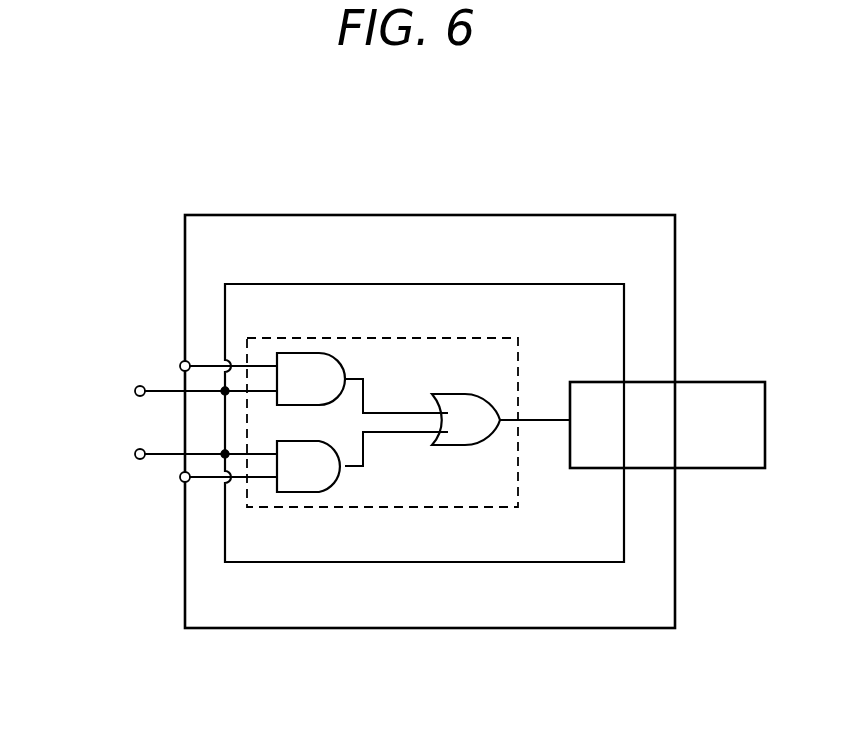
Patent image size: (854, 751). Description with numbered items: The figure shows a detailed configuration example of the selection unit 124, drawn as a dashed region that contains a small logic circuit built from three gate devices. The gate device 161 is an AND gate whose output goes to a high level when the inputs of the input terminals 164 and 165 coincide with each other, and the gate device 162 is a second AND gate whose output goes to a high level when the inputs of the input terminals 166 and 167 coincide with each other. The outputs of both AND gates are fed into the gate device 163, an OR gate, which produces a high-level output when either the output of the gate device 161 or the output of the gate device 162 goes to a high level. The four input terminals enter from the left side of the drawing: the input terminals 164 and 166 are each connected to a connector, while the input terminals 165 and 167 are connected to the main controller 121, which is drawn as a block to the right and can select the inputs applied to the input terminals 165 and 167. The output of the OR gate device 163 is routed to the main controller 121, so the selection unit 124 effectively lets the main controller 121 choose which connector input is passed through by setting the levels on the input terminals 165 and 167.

The main controller 121 is at (732, 382).
The selection unit 124 is at (462, 507).
The gate device 161 is at (313, 353).
The gate device 162 is at (307, 492).
The gate device 163 is at (462, 393).
The input terminal 164 is at (135, 391).
The input terminal 165 is at (180, 366).
The input terminal 166 is at (135, 454).
The input terminal 167 is at (180, 479).